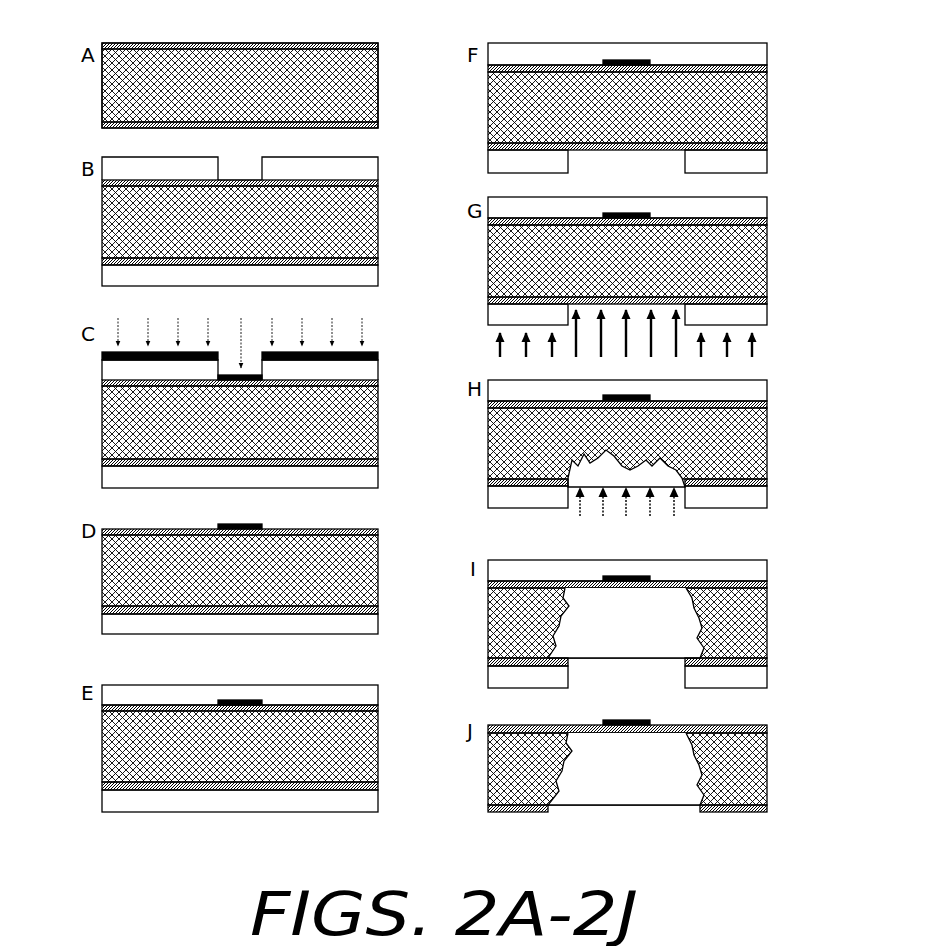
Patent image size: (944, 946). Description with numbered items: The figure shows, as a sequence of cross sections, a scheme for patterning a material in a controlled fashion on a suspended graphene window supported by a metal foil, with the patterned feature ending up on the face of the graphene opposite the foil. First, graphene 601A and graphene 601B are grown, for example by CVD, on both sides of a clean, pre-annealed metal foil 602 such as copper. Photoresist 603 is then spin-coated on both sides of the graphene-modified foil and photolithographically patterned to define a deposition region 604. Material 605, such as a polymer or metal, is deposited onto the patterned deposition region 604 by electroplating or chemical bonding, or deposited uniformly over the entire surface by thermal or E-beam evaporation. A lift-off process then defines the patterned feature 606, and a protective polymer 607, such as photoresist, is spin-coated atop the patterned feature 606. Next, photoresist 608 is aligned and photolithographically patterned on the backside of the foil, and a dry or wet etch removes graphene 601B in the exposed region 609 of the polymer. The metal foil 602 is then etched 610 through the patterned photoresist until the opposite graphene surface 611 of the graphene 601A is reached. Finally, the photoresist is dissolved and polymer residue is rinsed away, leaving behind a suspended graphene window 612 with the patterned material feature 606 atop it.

In FIG. 2A, the graphene 601A is at (386, 45).
In FIG. 2A, the graphene 601B is at (386, 121).
In FIG. 2A, the metal foil 602 is at (386, 82).
In FIG. 2B, the photoresist 603 is at (386, 170).
In FIG. 2B, the deposition region 604 is at (256, 178).
In FIG. 2C, the material 605 is at (386, 356).
In FIG. 2D, the patterned feature 606 is at (266, 528).
In FIG. 2J, the patterned feature 606 is at (625, 716).
In FIG. 2E, the protective polymer 607 is at (386, 701).
In FIG. 2F, the photoresist 608 is at (772, 162).
In FIG. 2G, the exposed region 609 is at (640, 293).
In FIG. 2H, the etch 610 is at (646, 453).
In FIG. 2I, the opposite graphene surface 611 is at (622, 594).
In FIG. 2J, the suspended graphene window 612 is at (592, 738).